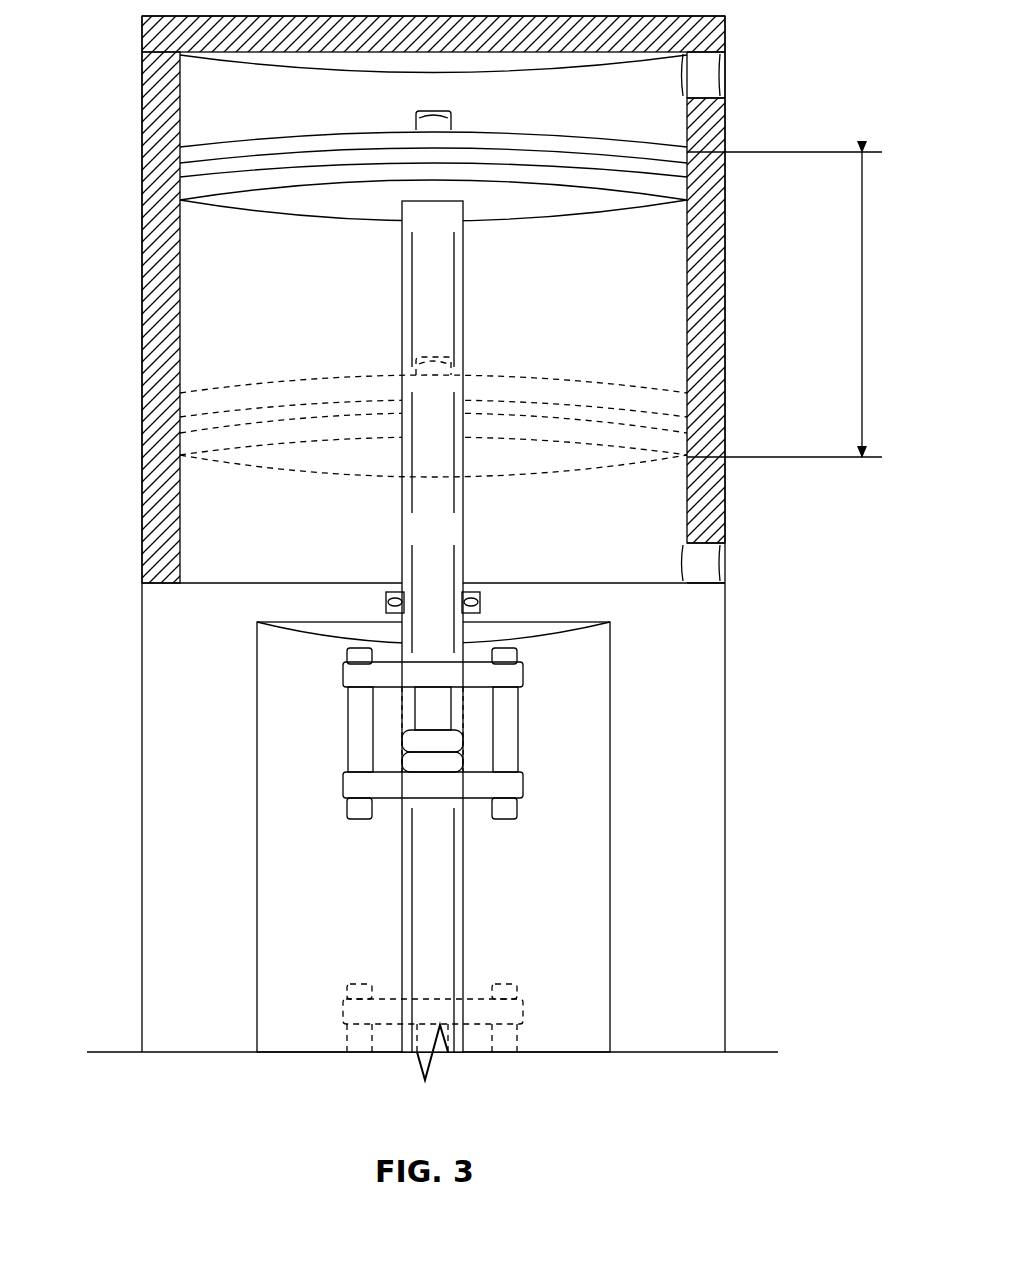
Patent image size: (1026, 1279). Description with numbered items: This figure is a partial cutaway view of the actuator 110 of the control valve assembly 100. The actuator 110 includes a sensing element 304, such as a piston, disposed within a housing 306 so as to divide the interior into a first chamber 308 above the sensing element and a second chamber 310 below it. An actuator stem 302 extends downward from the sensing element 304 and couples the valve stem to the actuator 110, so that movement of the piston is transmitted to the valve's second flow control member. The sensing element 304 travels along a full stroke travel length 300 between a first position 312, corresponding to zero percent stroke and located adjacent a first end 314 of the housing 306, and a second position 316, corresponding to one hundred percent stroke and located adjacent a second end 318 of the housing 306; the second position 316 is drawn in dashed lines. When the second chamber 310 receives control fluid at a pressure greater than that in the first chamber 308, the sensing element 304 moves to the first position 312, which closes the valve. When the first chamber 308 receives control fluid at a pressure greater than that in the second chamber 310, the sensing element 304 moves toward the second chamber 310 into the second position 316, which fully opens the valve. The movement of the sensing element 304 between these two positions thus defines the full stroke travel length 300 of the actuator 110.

The control valve assembly 100 is at (468, 540).
The actuator 110 is at (142, 255).
The full stroke travel length 300 is at (862, 305).
The actuator stem 302 is at (463, 535).
The sensing element 304 is at (190, 152).
The housing 306 is at (142, 357).
The first chamber 308 is at (255, 96).
The second chamber 310 is at (285, 306).
The first position 312 is at (706, 176).
The first end 314 is at (142, 35).
The second position 316 is at (706, 434).
The second end 318 is at (142, 552).